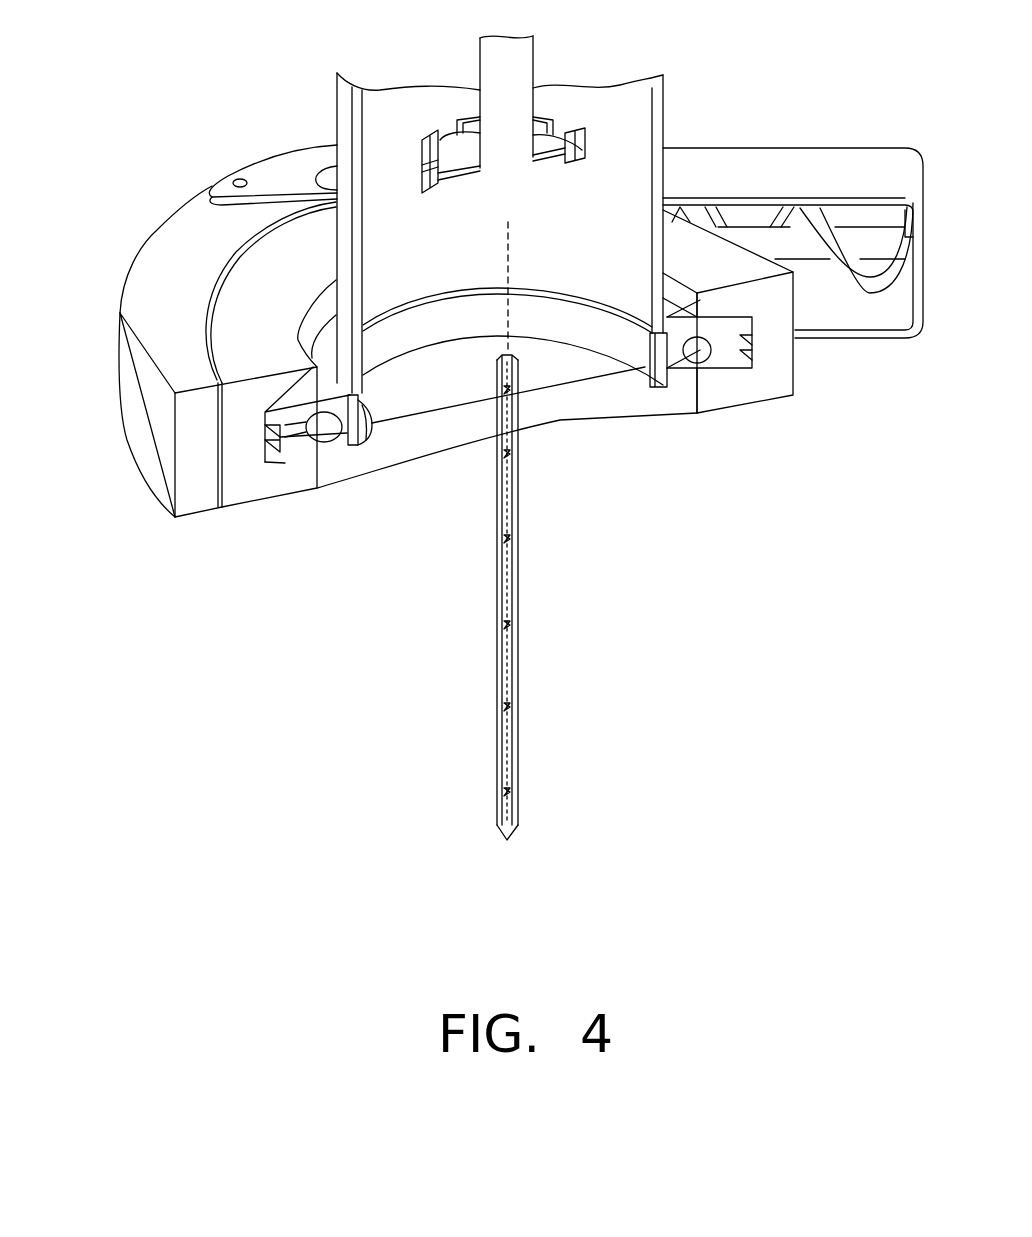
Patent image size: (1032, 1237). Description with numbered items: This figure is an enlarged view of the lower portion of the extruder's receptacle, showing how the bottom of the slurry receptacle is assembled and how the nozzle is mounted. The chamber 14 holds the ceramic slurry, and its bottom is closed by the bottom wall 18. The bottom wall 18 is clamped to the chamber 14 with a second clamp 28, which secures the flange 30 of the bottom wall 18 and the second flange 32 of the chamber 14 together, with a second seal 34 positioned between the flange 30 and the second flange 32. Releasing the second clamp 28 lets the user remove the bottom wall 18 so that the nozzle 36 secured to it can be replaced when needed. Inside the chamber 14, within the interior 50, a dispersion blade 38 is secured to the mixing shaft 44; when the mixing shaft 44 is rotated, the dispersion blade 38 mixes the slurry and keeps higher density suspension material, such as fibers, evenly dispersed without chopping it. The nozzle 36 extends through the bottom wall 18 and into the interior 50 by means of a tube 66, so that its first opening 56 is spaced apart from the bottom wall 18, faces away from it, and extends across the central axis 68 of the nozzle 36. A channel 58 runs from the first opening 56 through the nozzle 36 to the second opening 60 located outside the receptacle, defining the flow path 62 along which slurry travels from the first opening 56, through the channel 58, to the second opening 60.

The chamber 14 is at (658, 126).
The bottom wall 18 is at (557, 367).
The second clamp 28 is at (147, 432).
The flange 30 is at (720, 370).
The second flange 32 is at (713, 325).
The second seal 34 is at (693, 352).
The nozzle 36 is at (514, 583).
The dispersion blade 38 is at (565, 133).
The mixing shaft 44 is at (512, 67).
The interior 50 is at (397, 186).
The first opening 56 is at (506, 350).
The channel 58 is at (506, 553).
The second opening 60 is at (510, 828).
The flow path 62 is at (506, 757).
The tube 66 is at (497, 373).
The central axis 68 is at (508, 245).